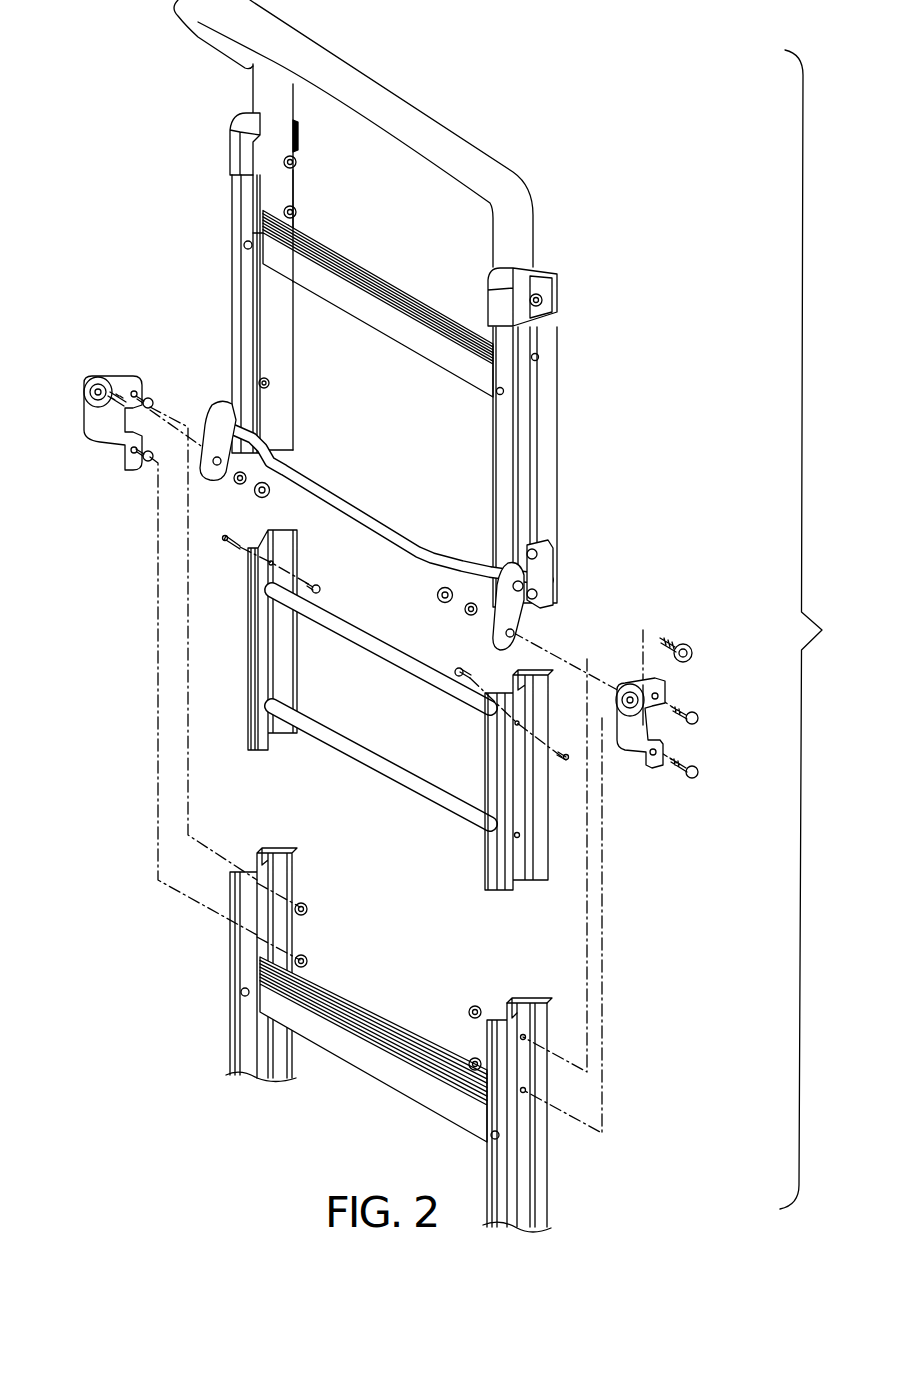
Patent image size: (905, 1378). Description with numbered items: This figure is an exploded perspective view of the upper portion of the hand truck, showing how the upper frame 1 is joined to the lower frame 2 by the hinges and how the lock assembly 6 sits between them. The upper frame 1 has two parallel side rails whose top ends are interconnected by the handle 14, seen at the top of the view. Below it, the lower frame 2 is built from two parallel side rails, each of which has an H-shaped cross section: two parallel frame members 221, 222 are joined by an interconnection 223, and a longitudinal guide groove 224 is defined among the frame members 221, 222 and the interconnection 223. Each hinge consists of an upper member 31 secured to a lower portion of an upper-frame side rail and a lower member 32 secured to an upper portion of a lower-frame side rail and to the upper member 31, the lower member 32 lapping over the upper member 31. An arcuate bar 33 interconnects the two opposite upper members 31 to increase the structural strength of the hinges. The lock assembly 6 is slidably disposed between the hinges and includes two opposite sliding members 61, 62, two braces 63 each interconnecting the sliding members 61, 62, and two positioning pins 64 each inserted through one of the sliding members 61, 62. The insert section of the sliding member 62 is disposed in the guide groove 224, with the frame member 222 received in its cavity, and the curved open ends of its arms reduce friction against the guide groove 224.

The upper frame 1 is at (580, 403).
The handle 14 is at (404, 80).
The lower frame 2 is at (208, 1022).
The frame member 221 is at (488, 1040).
The frame member 222 is at (522, 1002).
The interconnection 223 is at (527, 1160).
The longitudinal guide groove 224 is at (515, 1030).
The upper member 31 is at (215, 405).
The lower member 32 is at (93, 423).
The arcuate bar 33 is at (348, 513).
The lock assembly 6 is at (242, 644).
The sliding member 61 is at (295, 662).
The sliding member 62 is at (502, 760).
The brace 63 is at (368, 755).
The positioning pin 64 is at (228, 541).